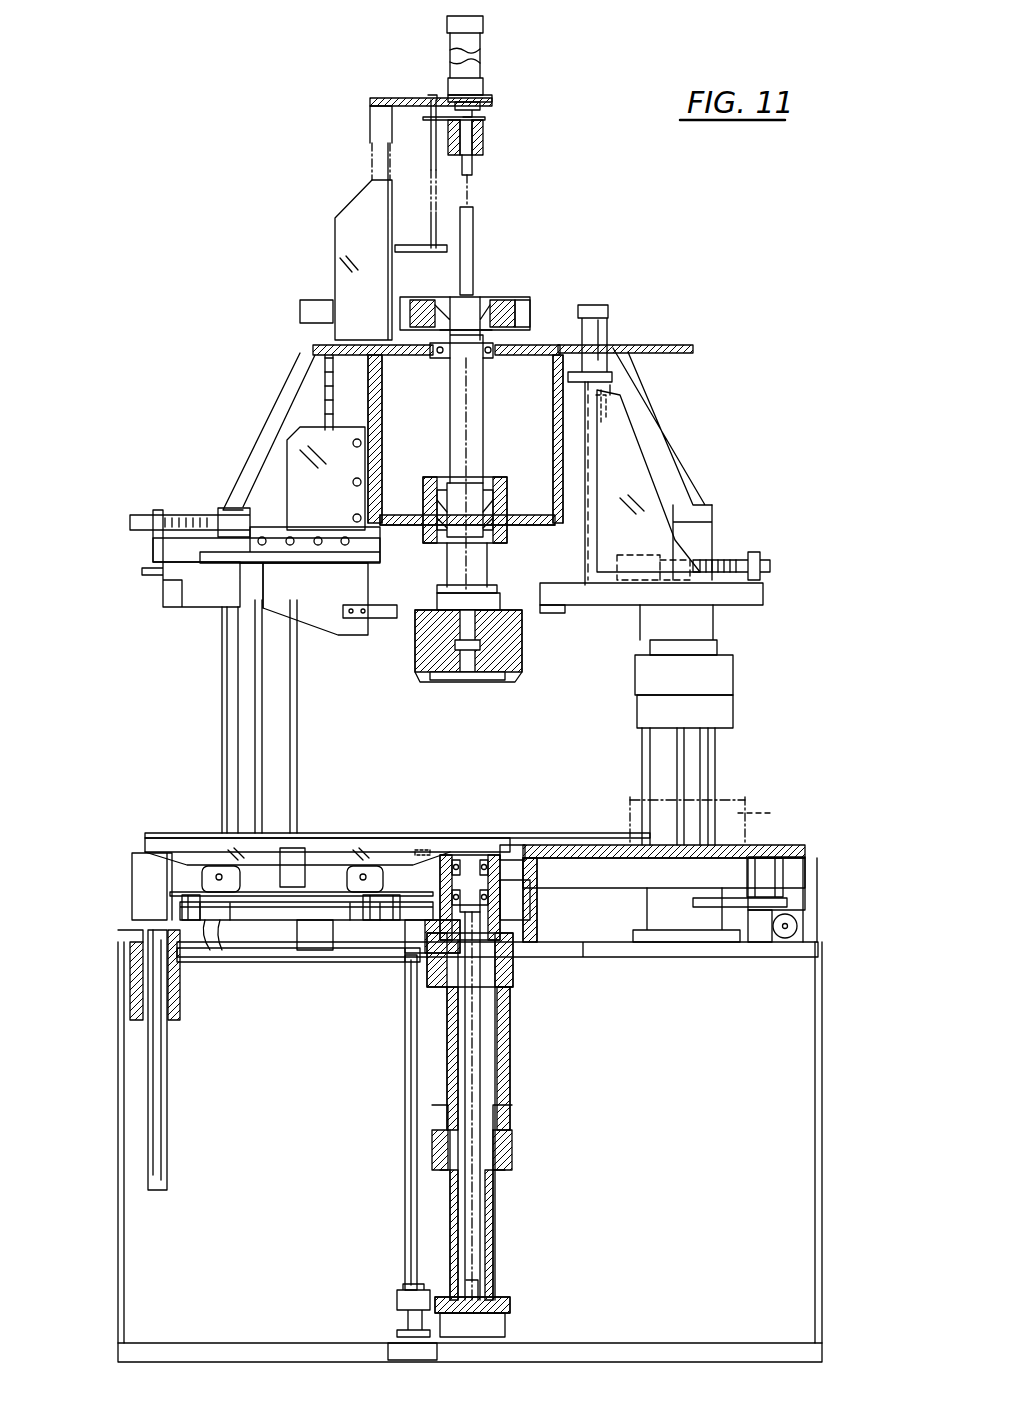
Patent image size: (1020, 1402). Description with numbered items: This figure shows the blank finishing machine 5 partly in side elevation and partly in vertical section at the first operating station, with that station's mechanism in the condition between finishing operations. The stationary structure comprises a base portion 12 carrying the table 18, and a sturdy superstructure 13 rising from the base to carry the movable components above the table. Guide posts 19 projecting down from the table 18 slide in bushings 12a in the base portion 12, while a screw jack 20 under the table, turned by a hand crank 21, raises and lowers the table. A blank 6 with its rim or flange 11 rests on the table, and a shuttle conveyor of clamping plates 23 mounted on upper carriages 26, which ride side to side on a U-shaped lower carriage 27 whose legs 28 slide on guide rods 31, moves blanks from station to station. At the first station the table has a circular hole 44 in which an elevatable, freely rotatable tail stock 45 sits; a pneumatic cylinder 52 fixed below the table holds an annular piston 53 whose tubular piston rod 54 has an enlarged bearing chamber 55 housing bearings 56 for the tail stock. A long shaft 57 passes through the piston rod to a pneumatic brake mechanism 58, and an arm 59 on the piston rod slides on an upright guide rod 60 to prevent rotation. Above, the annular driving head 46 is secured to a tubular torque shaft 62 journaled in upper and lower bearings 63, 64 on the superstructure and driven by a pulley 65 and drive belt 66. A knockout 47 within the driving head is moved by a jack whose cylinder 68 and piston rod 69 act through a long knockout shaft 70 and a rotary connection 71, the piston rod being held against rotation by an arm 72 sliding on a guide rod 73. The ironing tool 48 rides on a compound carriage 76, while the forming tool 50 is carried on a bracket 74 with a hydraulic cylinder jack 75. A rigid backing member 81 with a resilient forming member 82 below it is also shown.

The blank finishing machine 5 is at (772, 361).
The blank 6 is at (760, 815).
The flange 11 is at (745, 800).
The base portion 12 is at (822, 1098).
The bushings 12a is at (138, 972).
The superstructure 13 is at (687, 461).
The table 18 is at (600, 857).
The guide posts 19 is at (147, 1066).
The screw jack 20 is at (776, 888).
The hand crank 21 is at (798, 925).
The clamping plates 23 is at (328, 834).
The upper carriages 26 is at (148, 841).
The U-shaped lower carriage 27 is at (188, 882).
The legs 28 is at (212, 950).
The guide rods 31 is at (320, 930).
The circular hole 44 is at (517, 860).
The tail stock 45 is at (512, 846).
The driving head 46 is at (517, 587).
The knockout 47 is at (496, 681).
The ironing tool 48 is at (532, 611).
The forming tool 50 is at (392, 618).
The pneumatic cylinder 52 is at (512, 1056).
The annular piston 53 is at (500, 1115).
The tubular piston rod 54 is at (512, 1022).
The bearing chamber 55 is at (490, 900).
The bearings 56 is at (450, 903).
The shaft 57 is at (481, 1220).
The pneumatic brake mechanism 58 is at (506, 1318).
The arm 59 is at (397, 1302).
The guide rod 60 is at (406, 1190).
The tubular torque shaft 62 is at (450, 428).
The upper bearing 63 is at (445, 358).
The lower bearing 64 is at (440, 510).
The driven pulley 65 is at (517, 297).
The drive belt 66 is at (529, 312).
The cylinder 68 is at (483, 70).
The piston rod 69 is at (473, 108).
The knockout shaft 70 is at (477, 207).
The rotary connection 71 is at (486, 122).
The arm 72 is at (447, 118).
The guide rod 73 is at (435, 213).
The bracket 74 is at (370, 590).
The hydraulic cylinder jack 75 is at (198, 603).
The compound carriage 76 is at (663, 492).
The backing member 81 is at (735, 681).
The resilient forming member 82 is at (735, 714).